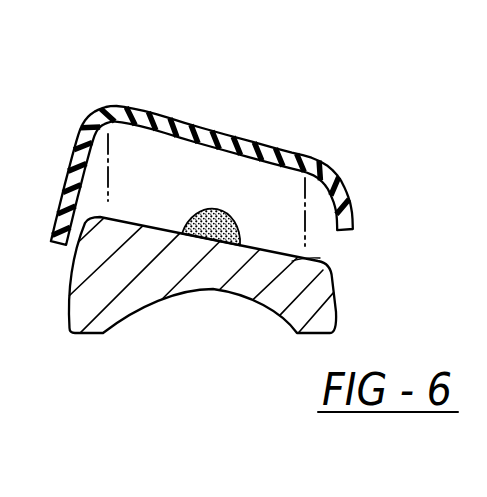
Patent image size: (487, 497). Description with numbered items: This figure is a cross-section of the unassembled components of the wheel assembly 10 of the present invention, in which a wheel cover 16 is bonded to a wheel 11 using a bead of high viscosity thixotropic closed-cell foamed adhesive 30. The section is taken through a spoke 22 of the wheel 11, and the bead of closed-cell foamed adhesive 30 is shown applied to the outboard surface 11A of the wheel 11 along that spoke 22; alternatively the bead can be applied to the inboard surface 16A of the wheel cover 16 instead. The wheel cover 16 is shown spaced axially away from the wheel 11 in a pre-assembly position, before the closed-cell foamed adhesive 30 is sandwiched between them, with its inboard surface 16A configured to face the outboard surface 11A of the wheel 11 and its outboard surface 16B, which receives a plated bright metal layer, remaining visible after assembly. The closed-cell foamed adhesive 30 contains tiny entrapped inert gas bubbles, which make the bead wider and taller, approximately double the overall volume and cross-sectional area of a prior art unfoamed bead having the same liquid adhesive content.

The wheel assembly 10 is at (26, 102).
The wheel cover 16 is at (182, 130).
The inboard surface 16A is at (205, 147).
The outboard surface 16B is at (287, 148).
The closed-cell foamed adhesive 30 is at (231, 214).
The spoke 22 is at (309, 297).
The outboard surface 11A is at (320, 258).
The wheel 11 is at (184, 318).